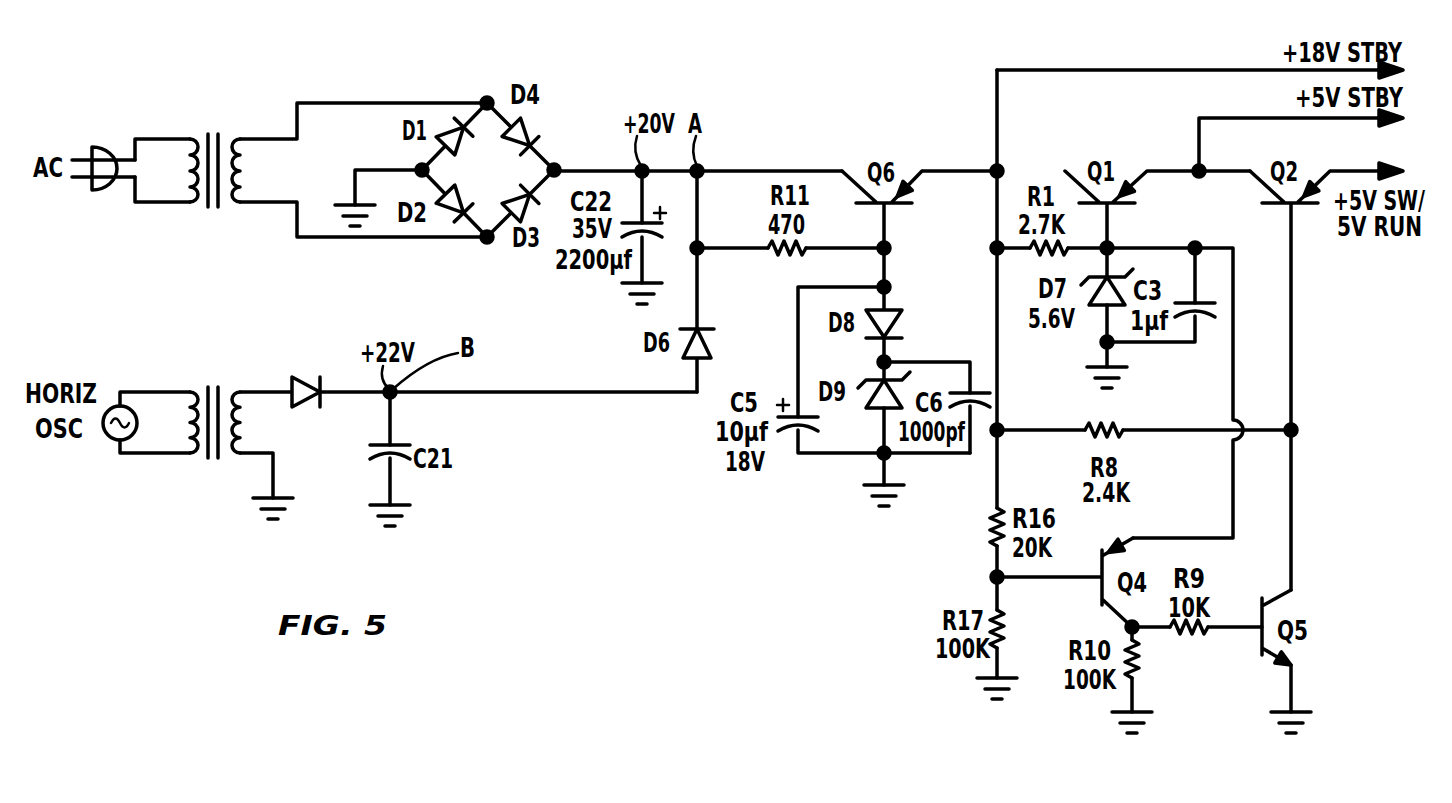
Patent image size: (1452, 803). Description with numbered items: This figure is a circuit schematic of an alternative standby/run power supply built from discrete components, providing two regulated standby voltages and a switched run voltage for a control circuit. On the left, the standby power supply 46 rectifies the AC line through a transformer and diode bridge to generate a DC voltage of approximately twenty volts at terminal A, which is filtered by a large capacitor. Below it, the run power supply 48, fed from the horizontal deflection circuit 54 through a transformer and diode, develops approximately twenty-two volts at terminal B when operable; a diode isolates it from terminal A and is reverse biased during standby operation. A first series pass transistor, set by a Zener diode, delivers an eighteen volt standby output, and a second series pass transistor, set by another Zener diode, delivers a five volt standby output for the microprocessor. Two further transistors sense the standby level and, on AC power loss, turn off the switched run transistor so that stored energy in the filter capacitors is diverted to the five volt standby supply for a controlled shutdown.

The standby power supply 46 is at (258, 138).
The horizontal deflection circuit 54 is at (160, 391).
The run power supply 48 is at (322, 453).